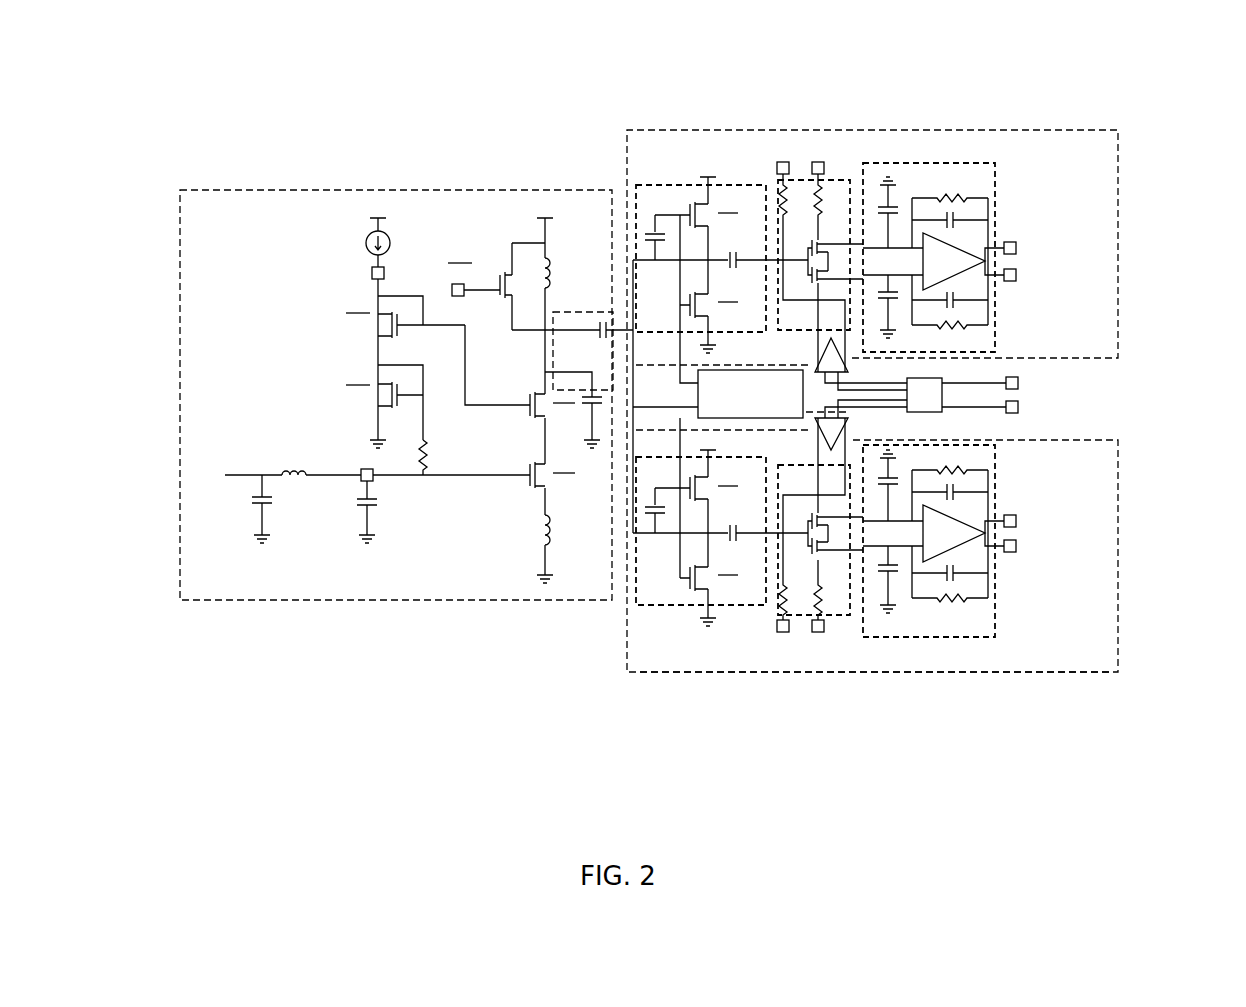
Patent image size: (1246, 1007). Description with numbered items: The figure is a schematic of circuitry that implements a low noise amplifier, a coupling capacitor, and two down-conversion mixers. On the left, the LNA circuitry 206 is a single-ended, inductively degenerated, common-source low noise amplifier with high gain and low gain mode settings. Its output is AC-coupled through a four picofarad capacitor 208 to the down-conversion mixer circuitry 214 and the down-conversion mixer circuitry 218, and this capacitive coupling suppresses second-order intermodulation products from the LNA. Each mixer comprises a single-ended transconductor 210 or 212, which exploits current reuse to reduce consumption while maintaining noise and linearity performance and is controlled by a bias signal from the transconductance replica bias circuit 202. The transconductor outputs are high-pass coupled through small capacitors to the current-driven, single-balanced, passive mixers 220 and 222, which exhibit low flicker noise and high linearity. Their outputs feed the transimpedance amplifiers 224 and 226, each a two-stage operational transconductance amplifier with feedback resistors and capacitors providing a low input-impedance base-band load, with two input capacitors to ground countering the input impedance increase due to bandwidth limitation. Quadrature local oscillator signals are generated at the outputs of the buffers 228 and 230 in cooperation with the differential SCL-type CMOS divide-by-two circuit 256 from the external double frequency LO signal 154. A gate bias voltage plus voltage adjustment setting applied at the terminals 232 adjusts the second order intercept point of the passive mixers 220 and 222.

The external double frequency LO signal 154 is at (1074, 380).
The transconductance replica bias circuit 202 is at (770, 408).
The LNA circuitry 206 is at (312, 189).
The capacitor 208 is at (603, 325).
The single-ended transconductor 210 is at (668, 185).
The single-ended transconductor 212 is at (650, 610).
The down-conversion mixer circuitry 214 is at (968, 128).
The down-conversion mixer circuitry 218 is at (840, 672).
The current-driven single-balanced passive mixer 220 is at (842, 178).
The current-driven single-balanced passive mixer 222 is at (850, 612).
The transimpedance amplifier 224 is at (990, 162).
The transimpedance amplifier 226 is at (990, 640).
The buffer 228 is at (815, 365).
The buffer 230 is at (840, 418).
The terminals 232 is at (803, 152).
The differential SCL-type CMOS divide-by-2 circuit 256 is at (927, 407).